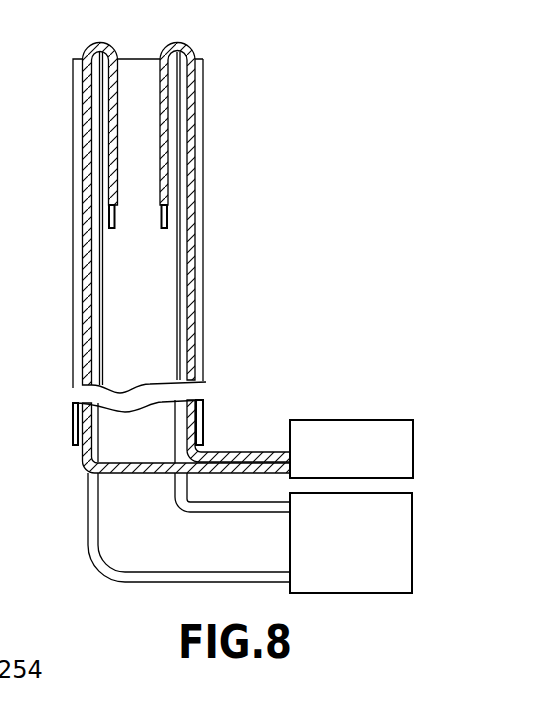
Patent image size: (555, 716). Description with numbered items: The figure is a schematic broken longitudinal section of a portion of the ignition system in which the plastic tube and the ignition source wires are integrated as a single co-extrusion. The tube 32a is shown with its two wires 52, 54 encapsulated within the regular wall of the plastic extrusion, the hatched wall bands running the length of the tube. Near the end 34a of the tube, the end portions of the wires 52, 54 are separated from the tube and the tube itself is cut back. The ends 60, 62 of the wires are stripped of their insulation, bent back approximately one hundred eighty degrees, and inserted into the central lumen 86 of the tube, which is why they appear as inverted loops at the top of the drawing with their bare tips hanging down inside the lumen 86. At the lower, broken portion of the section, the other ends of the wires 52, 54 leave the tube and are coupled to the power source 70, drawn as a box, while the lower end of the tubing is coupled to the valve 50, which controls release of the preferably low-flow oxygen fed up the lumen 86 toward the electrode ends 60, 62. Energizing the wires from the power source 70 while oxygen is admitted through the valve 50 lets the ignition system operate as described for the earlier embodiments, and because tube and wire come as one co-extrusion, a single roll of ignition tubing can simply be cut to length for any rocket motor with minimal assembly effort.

The end of the tube 34a is at (74, 58).
The tube 32a is at (207, 127).
The wire 52 is at (82, 319).
The wire 54 is at (190, 278).
The end of wire 60 is at (100, 222).
The end of wire 62 is at (165, 214).
The central lumen 86 is at (120, 255).
The power source 70 is at (375, 420).
The valve 50 is at (413, 562).